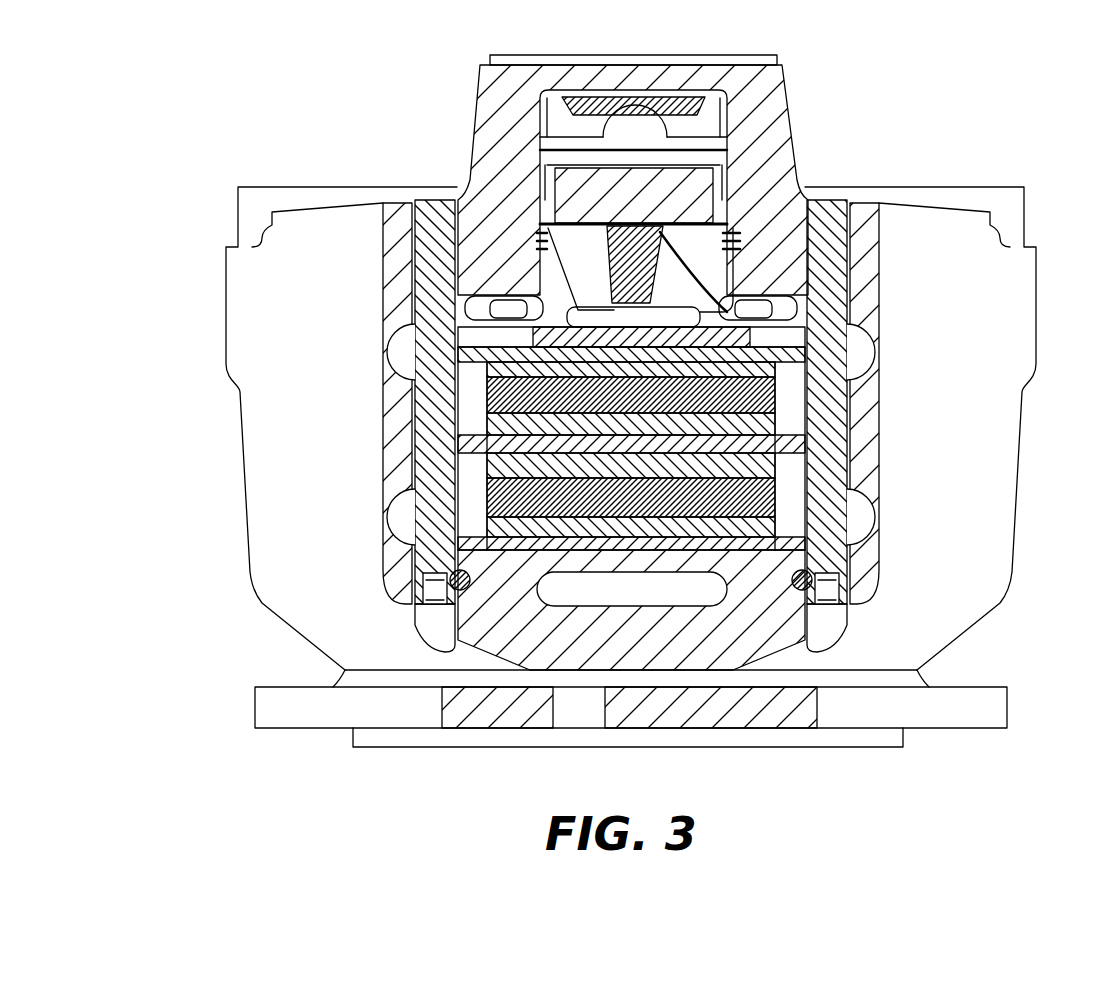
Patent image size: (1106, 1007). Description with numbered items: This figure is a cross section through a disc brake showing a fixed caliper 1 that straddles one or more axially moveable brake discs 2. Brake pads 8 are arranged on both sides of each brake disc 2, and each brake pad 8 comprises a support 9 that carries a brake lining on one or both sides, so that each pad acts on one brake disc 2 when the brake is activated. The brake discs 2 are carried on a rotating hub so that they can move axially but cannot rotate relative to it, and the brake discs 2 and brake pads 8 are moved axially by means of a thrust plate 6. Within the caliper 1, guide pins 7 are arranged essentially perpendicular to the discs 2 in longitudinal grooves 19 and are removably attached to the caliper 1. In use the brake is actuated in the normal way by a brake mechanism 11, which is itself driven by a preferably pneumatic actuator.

The fixed caliper 1 is at (1003, 447).
The brake disc 2 is at (414, 402).
The thrust plate 6 is at (455, 325).
The guide pin 7 is at (838, 225).
The brake pad 8 is at (452, 458).
The support 9 is at (452, 523).
The brake mechanism 11 is at (735, 150).
The longitudinal groove 19 is at (443, 204).